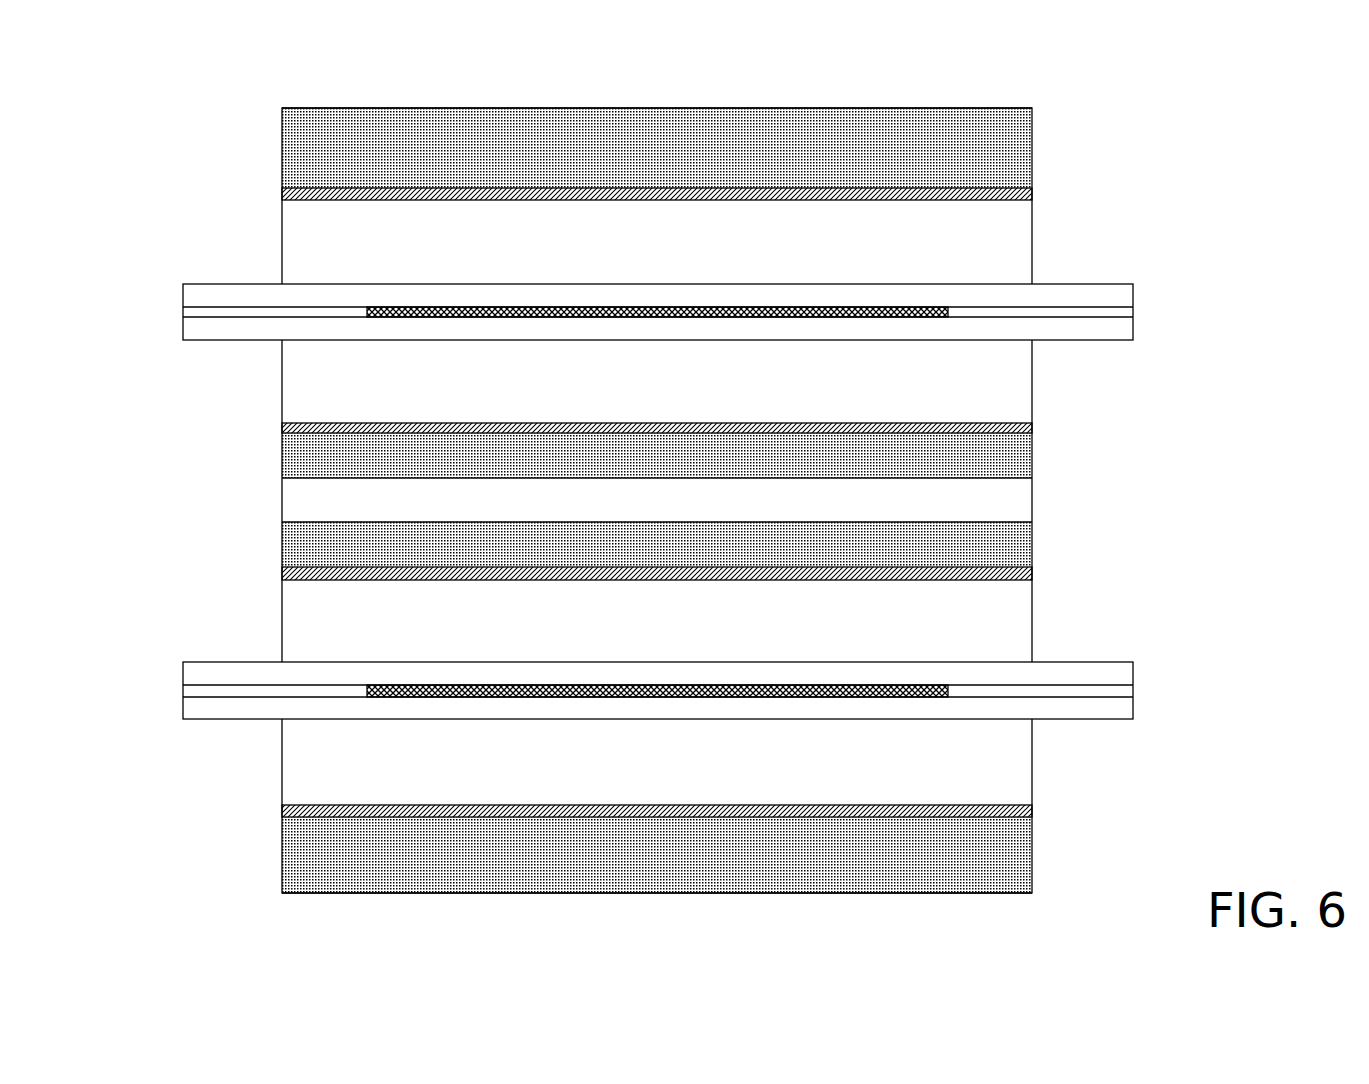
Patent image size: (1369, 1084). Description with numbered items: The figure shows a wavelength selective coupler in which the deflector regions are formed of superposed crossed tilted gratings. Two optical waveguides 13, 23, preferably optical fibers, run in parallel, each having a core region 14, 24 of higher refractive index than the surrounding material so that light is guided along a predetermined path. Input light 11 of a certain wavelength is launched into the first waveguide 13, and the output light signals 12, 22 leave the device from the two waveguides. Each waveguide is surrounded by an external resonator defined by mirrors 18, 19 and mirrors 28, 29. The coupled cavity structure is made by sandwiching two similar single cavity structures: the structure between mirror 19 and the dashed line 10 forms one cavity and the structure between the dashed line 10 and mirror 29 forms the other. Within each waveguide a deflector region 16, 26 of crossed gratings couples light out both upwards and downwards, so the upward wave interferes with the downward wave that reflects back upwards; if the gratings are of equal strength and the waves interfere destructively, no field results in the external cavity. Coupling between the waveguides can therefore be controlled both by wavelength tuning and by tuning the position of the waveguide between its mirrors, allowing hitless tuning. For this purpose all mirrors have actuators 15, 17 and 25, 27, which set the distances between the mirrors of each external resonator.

The dashed line 10 is at (280, 500).
The input light 11 is at (183, 691).
The output light signal 12 is at (1133, 691).
The optical waveguide 13 is at (218, 660).
The core region 14 is at (218, 699).
The actuator 15 is at (657, 548).
The deflector region 16 is at (420, 686).
The actuator 17 is at (657, 855).
The mirror 18 is at (1000, 582).
The mirror 19 is at (998, 805).
The output light signal 22 is at (1133, 313).
The second optical waveguide 23 is at (207, 284).
The core region 24 is at (1000, 316).
The actuator 25 is at (657, 455).
The deflector region 26 is at (442, 308).
The actuator 27 is at (657, 148).
The mirror 28 is at (317, 423).
The mirror 29 is at (303, 202).